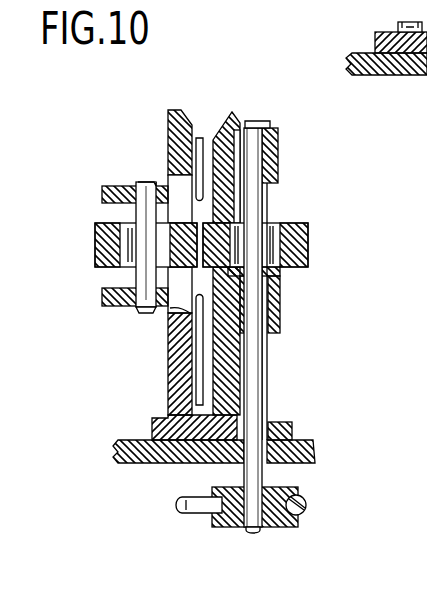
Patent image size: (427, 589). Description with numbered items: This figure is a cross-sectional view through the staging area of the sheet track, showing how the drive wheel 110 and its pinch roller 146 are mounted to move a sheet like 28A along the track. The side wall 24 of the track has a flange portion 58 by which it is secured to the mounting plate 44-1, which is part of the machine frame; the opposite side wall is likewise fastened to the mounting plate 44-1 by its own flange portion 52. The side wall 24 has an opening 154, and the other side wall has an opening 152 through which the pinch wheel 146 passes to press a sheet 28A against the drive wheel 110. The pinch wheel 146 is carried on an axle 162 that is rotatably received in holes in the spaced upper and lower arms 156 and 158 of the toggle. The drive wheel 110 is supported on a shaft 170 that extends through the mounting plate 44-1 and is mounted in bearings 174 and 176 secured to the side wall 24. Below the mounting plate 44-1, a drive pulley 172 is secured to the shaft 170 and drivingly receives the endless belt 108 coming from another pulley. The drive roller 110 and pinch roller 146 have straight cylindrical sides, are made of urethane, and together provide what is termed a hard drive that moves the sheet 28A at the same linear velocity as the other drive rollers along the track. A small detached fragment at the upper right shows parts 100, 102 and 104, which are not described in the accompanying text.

The side wall 24 is at (234, 114).
The sheet 28A is at (201, 137).
The mounting plate 44-1 is at (315, 450).
The flange portion 52 is at (152, 434).
The flange portion 58 is at (286, 428).
The block 100 is at (375, 42).
The contact 102 is at (404, 22).
The plate 104 is at (386, 80).
The endless belt 108 is at (180, 510).
The drive wheel 110 is at (308, 240).
The pinch wheel 146 is at (96, 243).
The opening 152 is at (175, 309).
The opening 154 is at (255, 272).
The upper arm 156 is at (102, 190).
The lower arm 158 is at (102, 300).
The axle 162 is at (144, 182).
The shaft 170 is at (262, 198).
The drive pulley 172 is at (300, 497).
The bearing 174 is at (278, 160).
The bearing 176 is at (280, 330).